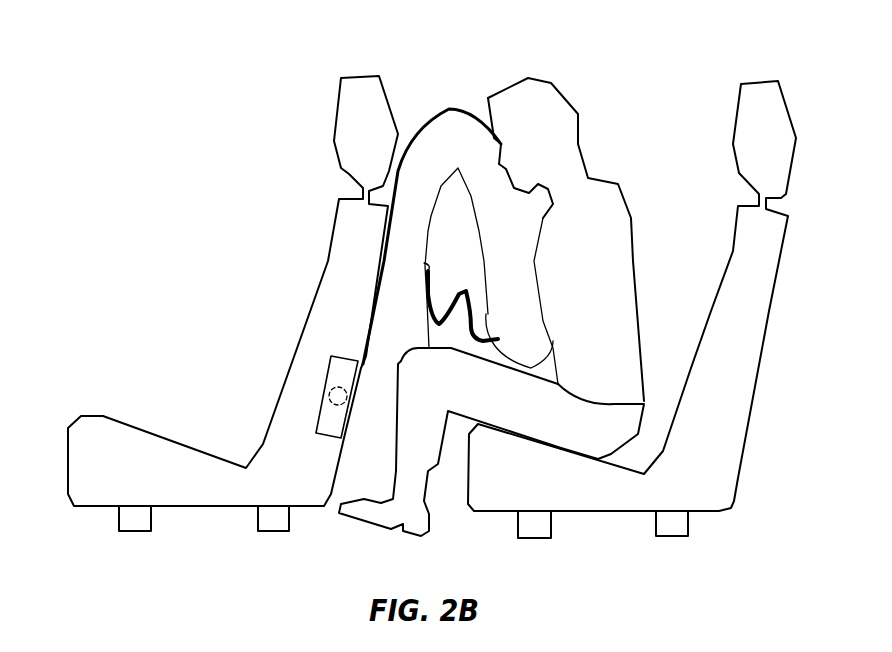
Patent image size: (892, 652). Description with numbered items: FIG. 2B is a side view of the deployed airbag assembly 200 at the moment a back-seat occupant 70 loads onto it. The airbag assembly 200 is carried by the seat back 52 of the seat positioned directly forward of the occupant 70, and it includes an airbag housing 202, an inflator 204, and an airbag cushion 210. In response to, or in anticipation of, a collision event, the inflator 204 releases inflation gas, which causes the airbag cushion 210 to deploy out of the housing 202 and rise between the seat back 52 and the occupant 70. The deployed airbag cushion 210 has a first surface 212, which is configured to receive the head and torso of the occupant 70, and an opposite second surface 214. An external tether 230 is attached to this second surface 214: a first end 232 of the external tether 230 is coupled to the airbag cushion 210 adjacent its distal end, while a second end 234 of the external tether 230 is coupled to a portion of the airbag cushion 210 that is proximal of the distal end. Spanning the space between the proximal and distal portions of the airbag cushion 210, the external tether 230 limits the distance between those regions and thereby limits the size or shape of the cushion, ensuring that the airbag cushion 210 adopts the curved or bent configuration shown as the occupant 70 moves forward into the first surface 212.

The airbag assembly 200 is at (460, 70).
The airbag cushion 210 is at (443, 105).
The second surface 214 is at (447, 203).
The first surface 212 is at (533, 215).
The external tether 230 is at (462, 290).
The first end 232 is at (488, 314).
The second end 234 is at (425, 268).
The airbag housing 202 is at (330, 373).
The inflator 204 is at (327, 393).
The seat back 52 is at (361, 301).
The occupant 70 is at (594, 259).